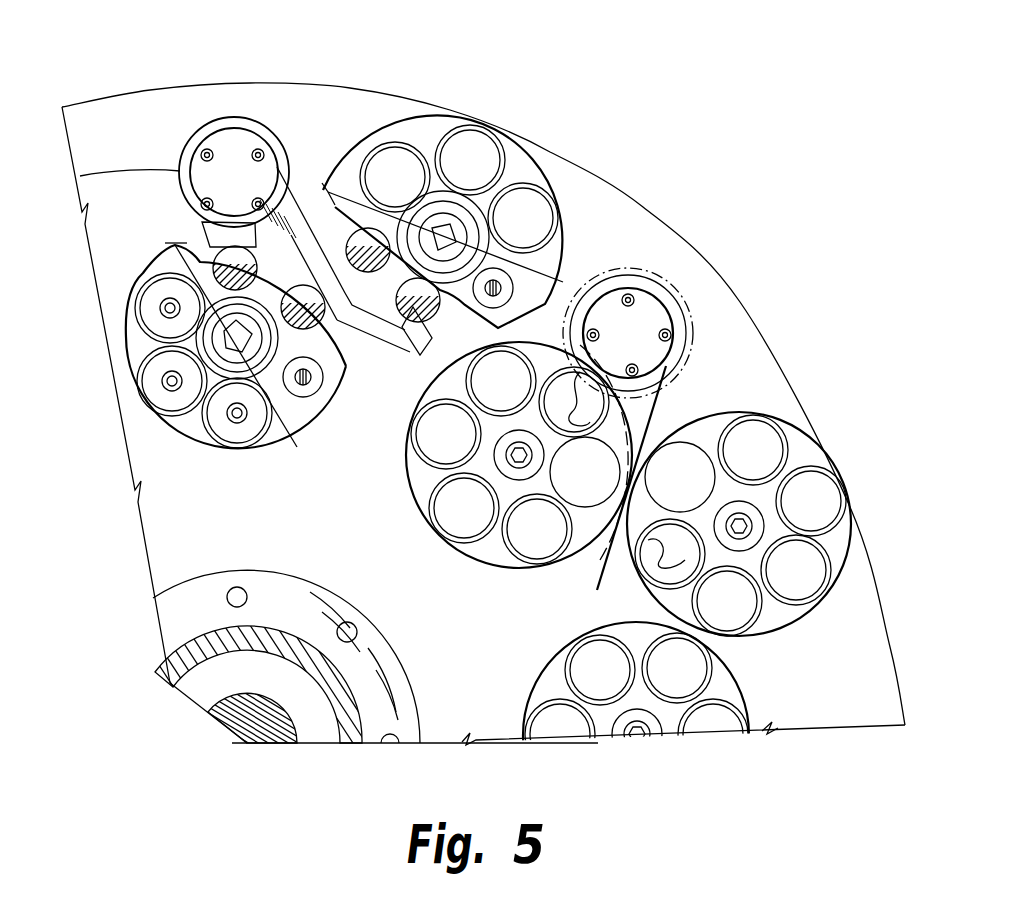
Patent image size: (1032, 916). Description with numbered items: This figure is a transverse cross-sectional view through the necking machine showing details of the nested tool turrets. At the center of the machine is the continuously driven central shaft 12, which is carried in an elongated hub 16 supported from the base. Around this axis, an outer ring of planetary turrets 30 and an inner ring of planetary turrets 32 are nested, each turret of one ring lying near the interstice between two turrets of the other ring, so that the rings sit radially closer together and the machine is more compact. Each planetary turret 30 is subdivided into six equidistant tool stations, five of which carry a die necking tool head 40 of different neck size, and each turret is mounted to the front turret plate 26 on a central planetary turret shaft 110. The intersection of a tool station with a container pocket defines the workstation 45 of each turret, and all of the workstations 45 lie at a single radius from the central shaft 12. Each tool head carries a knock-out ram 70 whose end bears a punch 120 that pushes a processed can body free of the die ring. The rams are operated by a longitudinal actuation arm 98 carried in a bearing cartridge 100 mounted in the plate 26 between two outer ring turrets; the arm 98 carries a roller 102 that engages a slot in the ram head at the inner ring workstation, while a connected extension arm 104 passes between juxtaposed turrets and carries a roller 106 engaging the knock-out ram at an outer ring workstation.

The central shaft 12 is at (233, 733).
The elongated hub 16 is at (168, 672).
The front turret plate 26 is at (118, 116).
The planetary turret 30 is at (520, 150).
The planetary turret 32 is at (190, 437).
The tool head 40 is at (135, 368).
The workstation 45 is at (655, 535).
The knock-out ram 70 is at (307, 392).
The actuation arm 98 is at (246, 130).
The bearing cartridge 100 is at (670, 225).
The roller 102 is at (213, 258).
The extension arm 104 is at (392, 96).
The roller 106 is at (395, 358).
The planetary turret shaft 110 is at (745, 505).
The punch 120 is at (160, 398).